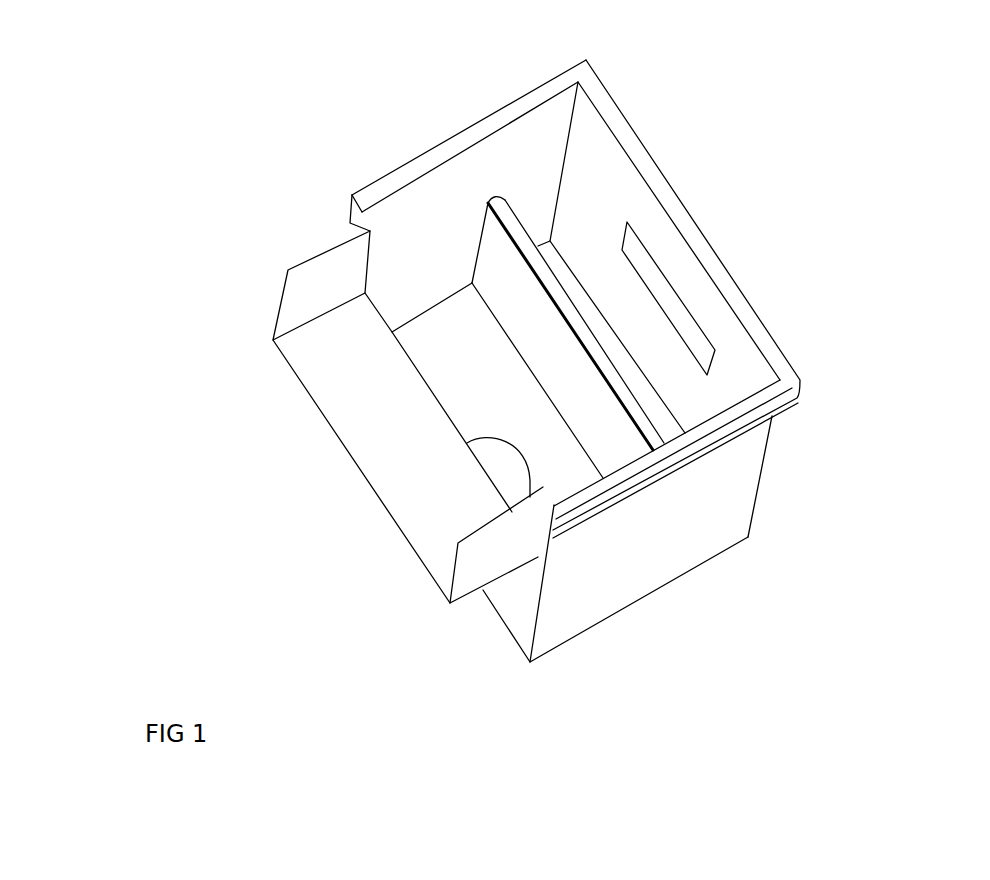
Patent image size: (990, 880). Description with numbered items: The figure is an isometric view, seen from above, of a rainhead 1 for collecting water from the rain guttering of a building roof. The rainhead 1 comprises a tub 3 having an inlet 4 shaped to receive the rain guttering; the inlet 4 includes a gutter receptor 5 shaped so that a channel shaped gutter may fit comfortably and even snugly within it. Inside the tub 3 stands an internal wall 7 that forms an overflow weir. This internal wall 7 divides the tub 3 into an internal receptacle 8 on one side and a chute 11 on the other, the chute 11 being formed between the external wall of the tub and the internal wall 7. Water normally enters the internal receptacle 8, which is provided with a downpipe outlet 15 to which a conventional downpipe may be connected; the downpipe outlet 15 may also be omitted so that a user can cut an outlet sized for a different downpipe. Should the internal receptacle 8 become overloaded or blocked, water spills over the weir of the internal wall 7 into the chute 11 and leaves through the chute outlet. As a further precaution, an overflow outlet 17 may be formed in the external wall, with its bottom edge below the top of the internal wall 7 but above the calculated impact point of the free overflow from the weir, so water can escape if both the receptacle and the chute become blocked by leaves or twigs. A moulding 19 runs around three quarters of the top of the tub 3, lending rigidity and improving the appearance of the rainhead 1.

The rainhead 1 is at (764, 491).
The tub 3 is at (636, 574).
The inlet 4 is at (350, 404).
The gutter receptor 5 is at (440, 523).
The internal wall 7 is at (588, 385).
The internal receptacle 8 is at (551, 452).
The chute 11 is at (585, 232).
The downpipe outlet 15 is at (498, 476).
The overflow outlet 17 is at (655, 291).
The moulding 19 is at (760, 311).